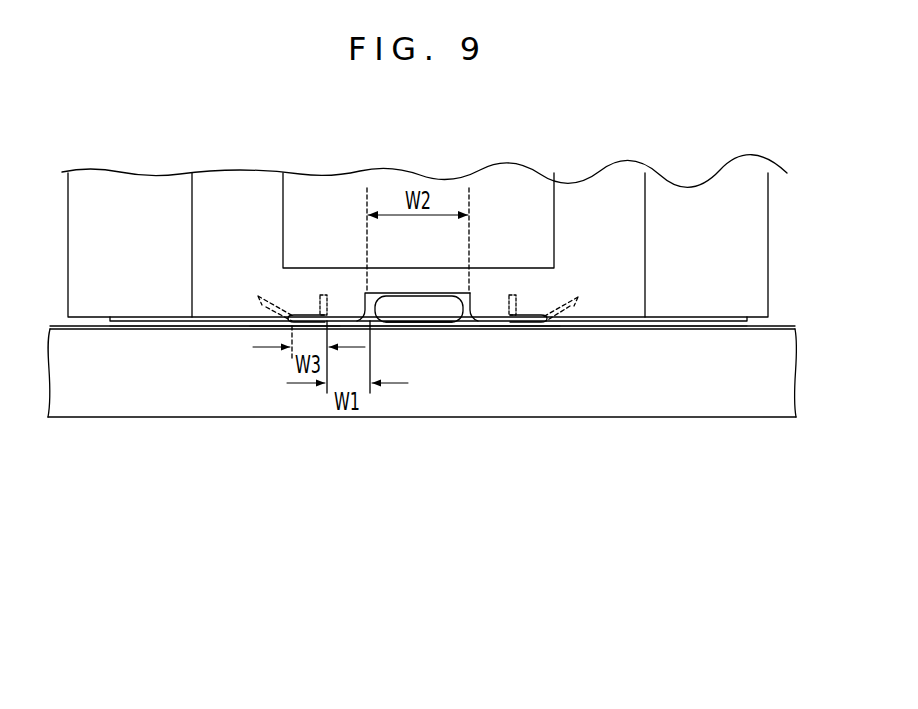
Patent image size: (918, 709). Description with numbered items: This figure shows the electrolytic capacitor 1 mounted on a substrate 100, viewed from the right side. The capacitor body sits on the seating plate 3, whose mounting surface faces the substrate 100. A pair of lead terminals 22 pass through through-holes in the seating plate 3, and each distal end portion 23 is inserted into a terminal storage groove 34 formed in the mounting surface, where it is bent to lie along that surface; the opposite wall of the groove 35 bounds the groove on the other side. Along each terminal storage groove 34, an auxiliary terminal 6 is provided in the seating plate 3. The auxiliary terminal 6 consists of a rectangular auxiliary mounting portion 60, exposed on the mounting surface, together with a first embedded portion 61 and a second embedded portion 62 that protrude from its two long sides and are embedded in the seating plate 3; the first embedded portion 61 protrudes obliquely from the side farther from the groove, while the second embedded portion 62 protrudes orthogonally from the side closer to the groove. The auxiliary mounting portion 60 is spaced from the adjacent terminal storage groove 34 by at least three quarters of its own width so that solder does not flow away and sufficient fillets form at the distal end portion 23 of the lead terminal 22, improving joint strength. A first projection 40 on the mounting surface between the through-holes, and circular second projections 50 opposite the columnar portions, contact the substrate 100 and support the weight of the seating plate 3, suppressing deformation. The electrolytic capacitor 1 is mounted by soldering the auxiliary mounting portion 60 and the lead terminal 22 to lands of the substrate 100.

The electrolytic capacitor 1 is at (775, 204).
The seating plate 3 is at (769, 278).
The auxiliary terminal 6 is at (253, 329).
The lead terminal 22 is at (432, 295).
The distal end portion 23 is at (420, 323).
The terminal storage groove 34 is at (370, 292).
The opening side wall 35 is at (472, 320).
The first projection 40 is at (596, 329).
The second projection 50 is at (148, 322).
The auxiliary mounting portion 60 is at (311, 316).
The first embedded portion 61 is at (260, 297).
The second embedded portion 62 is at (326, 292).
The substrate 100 is at (766, 418).